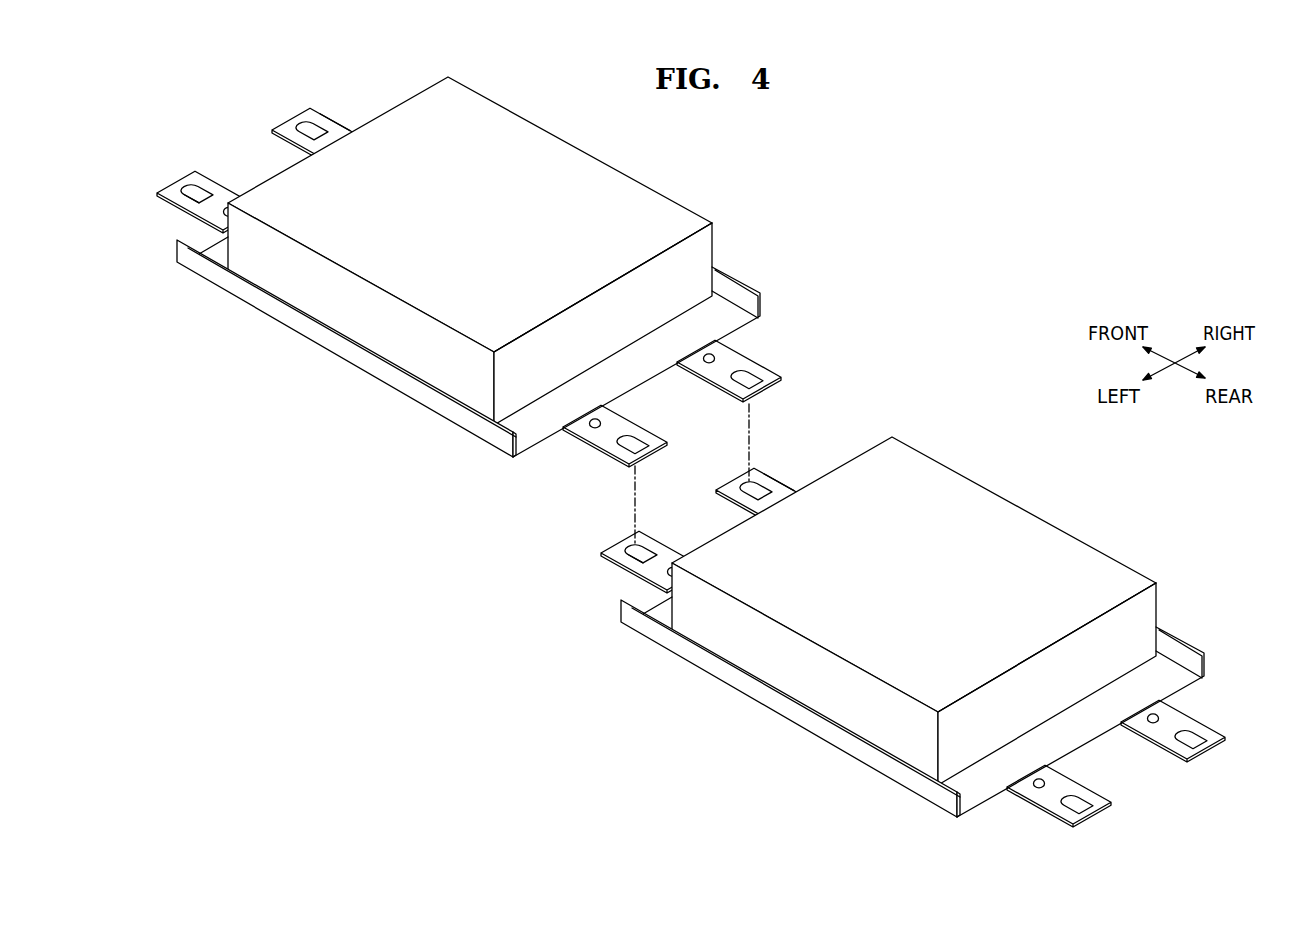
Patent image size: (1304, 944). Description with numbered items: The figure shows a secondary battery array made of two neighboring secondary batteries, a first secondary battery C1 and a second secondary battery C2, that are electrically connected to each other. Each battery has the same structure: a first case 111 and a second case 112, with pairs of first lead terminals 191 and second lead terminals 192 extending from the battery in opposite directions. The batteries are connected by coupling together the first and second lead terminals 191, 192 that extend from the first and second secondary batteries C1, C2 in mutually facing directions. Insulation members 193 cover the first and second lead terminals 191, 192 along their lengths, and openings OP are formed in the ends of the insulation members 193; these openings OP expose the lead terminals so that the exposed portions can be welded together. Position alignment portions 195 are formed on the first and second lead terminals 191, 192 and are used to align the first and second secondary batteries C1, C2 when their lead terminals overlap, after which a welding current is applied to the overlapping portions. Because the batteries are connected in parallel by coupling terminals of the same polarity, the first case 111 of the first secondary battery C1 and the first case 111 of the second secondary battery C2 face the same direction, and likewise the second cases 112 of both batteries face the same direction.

The first case 111 is at (408, 397).
The second case 112 is at (600, 165).
The first lead terminal 191 is at (294, 118).
The second lead terminal 192 is at (181, 185).
The insulation member 193 is at (332, 127).
The position alignment portion 195 is at (714, 357).
The opening OP is at (195, 192).
The first secondary battery C1 is at (686, 187).
The second secondary battery C2 is at (1063, 606).